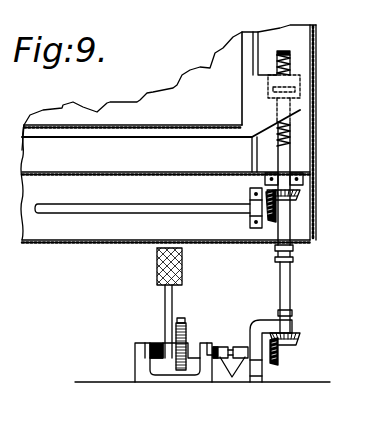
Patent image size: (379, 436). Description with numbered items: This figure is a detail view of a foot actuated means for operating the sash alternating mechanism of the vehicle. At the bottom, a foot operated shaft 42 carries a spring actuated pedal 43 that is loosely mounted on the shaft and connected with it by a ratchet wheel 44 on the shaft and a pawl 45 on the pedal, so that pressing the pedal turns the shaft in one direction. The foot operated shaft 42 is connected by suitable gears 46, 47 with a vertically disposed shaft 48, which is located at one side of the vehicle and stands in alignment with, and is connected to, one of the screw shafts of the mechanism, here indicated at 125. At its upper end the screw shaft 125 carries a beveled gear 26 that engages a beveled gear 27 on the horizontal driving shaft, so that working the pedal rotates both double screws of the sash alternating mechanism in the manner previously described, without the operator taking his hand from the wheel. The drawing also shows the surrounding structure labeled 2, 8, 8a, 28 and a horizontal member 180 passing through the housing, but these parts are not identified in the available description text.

The side wall 2 is at (317, 47).
The housing 8 is at (168, 134).
The housing extension 8a is at (298, 108).
The spring 28 is at (297, 92).
The screw shaft 125 is at (290, 140).
The beveled gear 27 is at (300, 196).
The beveled gear 26 is at (272, 224).
The rod 180 is at (78, 208).
The vertically disposed shaft 48 is at (292, 272).
The gear 47 is at (298, 338).
The gear 46 is at (276, 360).
The spring actuated pedal 43 is at (165, 297).
The ratchet wheel 44 is at (186, 343).
The pawl 45 is at (181, 320).
The foot operated shaft 42 is at (232, 378).